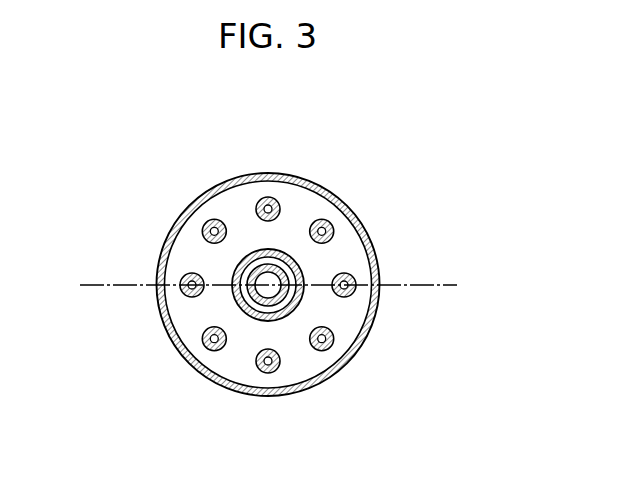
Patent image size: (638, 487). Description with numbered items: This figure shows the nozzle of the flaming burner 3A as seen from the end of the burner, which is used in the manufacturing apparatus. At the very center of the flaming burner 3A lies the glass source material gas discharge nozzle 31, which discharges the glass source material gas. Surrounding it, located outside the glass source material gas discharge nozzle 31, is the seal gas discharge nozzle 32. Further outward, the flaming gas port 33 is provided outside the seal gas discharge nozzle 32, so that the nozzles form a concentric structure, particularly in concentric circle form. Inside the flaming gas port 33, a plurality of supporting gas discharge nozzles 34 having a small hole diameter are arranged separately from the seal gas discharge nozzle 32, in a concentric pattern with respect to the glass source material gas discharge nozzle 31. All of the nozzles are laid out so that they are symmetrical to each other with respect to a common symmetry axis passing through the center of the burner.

The flaming burner 3A is at (367, 192).
The glass source material gas discharge nozzle 31 is at (273, 292).
The seal gas discharge nozzle 32 is at (290, 292).
The flaming gas port 33 is at (343, 253).
The supporting gas discharge nozzles 34 is at (348, 293).